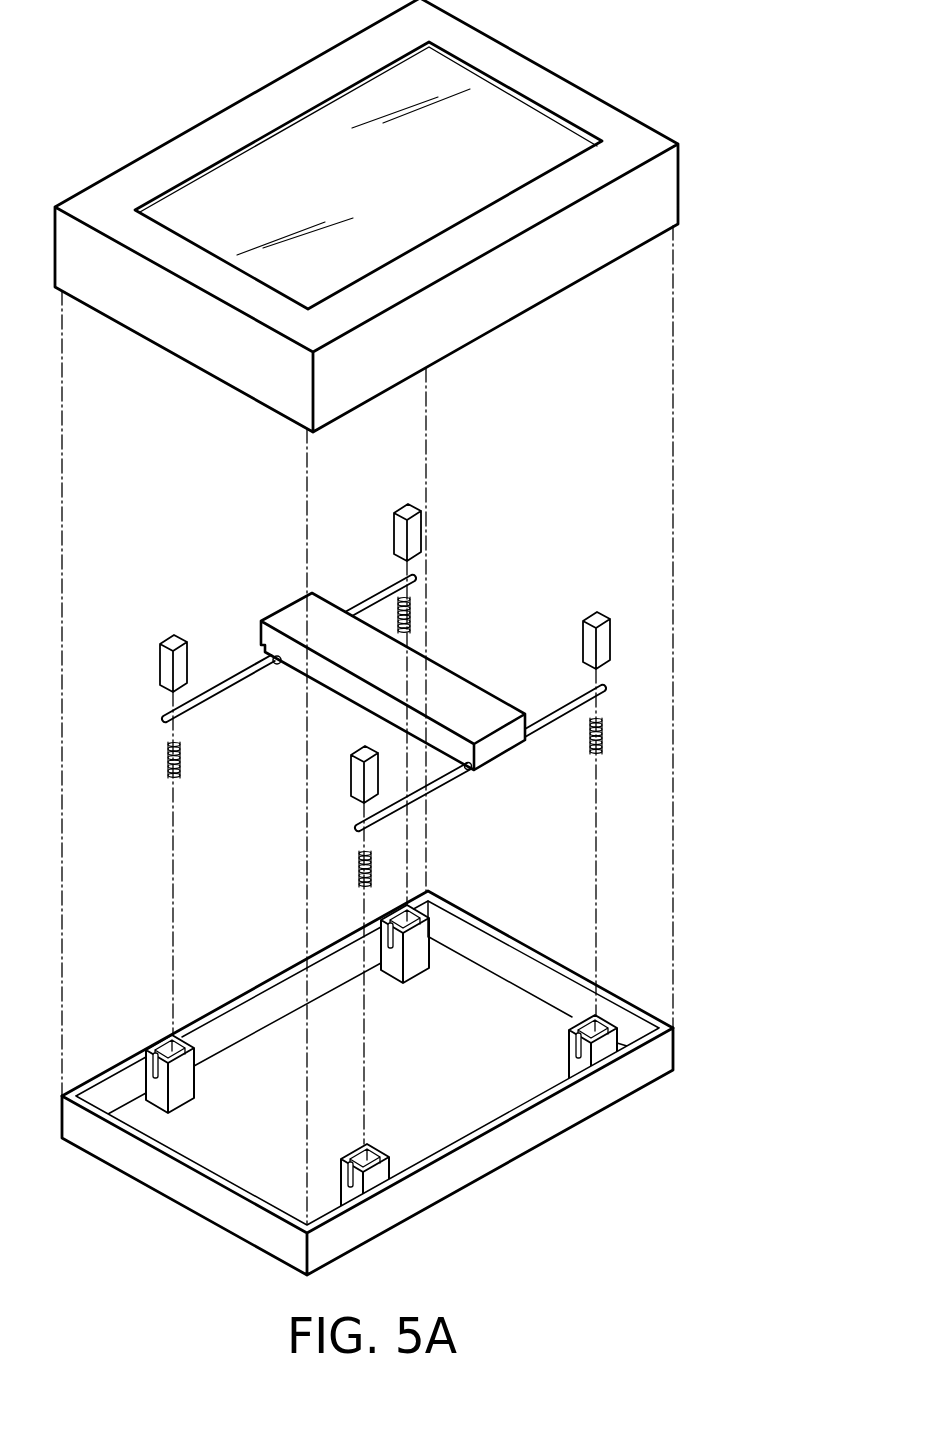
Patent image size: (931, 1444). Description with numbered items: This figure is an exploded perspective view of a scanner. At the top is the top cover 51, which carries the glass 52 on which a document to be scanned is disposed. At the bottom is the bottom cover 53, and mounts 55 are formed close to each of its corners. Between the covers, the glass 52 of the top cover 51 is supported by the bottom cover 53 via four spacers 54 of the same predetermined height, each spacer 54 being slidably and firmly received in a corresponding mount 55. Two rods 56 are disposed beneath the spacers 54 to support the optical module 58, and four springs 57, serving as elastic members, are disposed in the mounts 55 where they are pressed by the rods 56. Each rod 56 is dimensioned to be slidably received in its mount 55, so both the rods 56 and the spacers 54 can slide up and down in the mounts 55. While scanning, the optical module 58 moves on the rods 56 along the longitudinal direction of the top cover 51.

The top cover 51 is at (117, 165).
The glass 52 is at (231, 200).
The bottom cover 53 is at (546, 1151).
The spacer 54 is at (406, 507).
The mount 55 is at (423, 948).
The rod 56 is at (219, 684).
The spring 57 is at (411, 614).
The optical module 58 is at (286, 616).